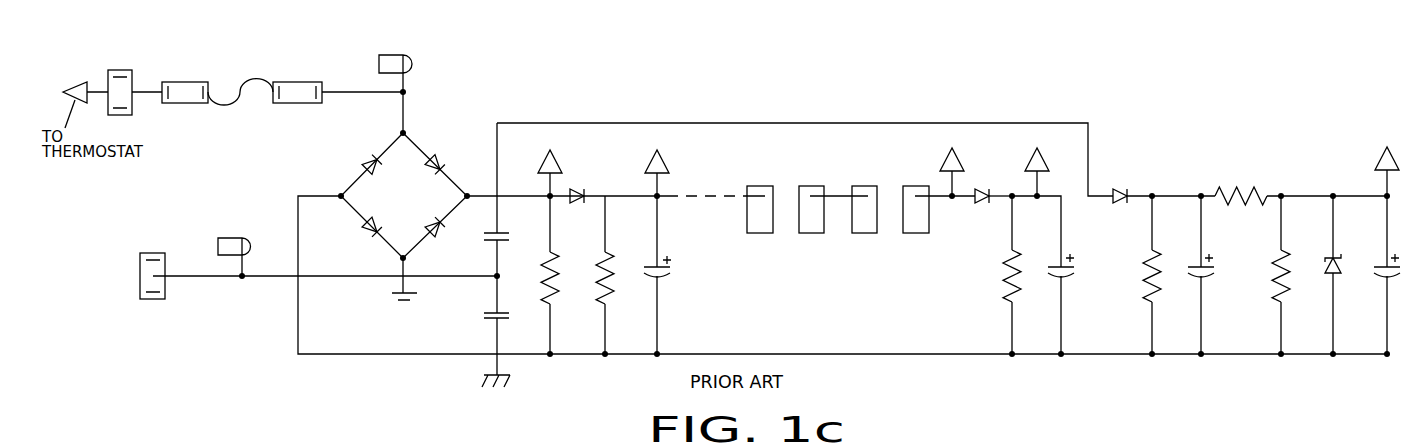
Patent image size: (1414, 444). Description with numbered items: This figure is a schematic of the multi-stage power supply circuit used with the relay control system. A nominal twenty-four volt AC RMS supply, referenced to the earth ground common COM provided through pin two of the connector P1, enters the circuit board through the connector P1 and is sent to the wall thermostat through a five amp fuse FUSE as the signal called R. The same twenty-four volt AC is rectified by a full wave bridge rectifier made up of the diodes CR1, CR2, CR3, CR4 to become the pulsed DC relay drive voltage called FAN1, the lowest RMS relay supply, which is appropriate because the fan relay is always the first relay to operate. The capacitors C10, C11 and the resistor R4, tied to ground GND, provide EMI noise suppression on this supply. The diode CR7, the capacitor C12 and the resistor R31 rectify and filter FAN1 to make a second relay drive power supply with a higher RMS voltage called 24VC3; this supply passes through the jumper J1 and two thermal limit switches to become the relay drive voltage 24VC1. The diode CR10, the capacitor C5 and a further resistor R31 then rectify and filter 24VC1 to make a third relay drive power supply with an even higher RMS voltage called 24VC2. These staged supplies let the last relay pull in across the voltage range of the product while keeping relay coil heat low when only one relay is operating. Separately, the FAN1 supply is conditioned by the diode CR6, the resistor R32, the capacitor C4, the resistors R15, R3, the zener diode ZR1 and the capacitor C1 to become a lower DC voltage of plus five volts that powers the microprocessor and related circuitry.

The R signal R is at (129, 92).
The fuse FUSE is at (242, 81).
The connector P1 is at (315, 145).
The diode CR1 is at (449, 157).
The diode CR2 is at (357, 158).
The diode CR3 is at (357, 234).
The diode CR4 is at (443, 237).
The common COM is at (265, 280).
The capacitor C10 is at (509, 225).
The capacitor C11 is at (509, 327).
The ground GND is at (498, 380).
The pulsed DC relay drive voltage FAN1 is at (542, 165).
The diode CR7 is at (587, 185).
The resistor R4 is at (559, 276).
The resistor R31 is at (808, 275).
The second relay drive power supply 24VC3 is at (659, 164).
The capacitor C12 is at (673, 276).
The jumper J1 is at (707, 183).
The relay drive voltage 24VC1 is at (950, 165).
The diode CR10 is at (986, 203).
The third relay drive power supply 24VC2 is at (1037, 165).
The capacitor C5 is at (1070, 276).
The diode CR6 is at (1125, 183).
The resistor R32 is at (1135, 275).
The capacitor C4 is at (1195, 275).
The resistor R15 is at (1241, 184).
The resistor R3 is at (1270, 275).
The zener diode ZR1 is at (1321, 275).
The capacitor C1 is at (1384, 275).